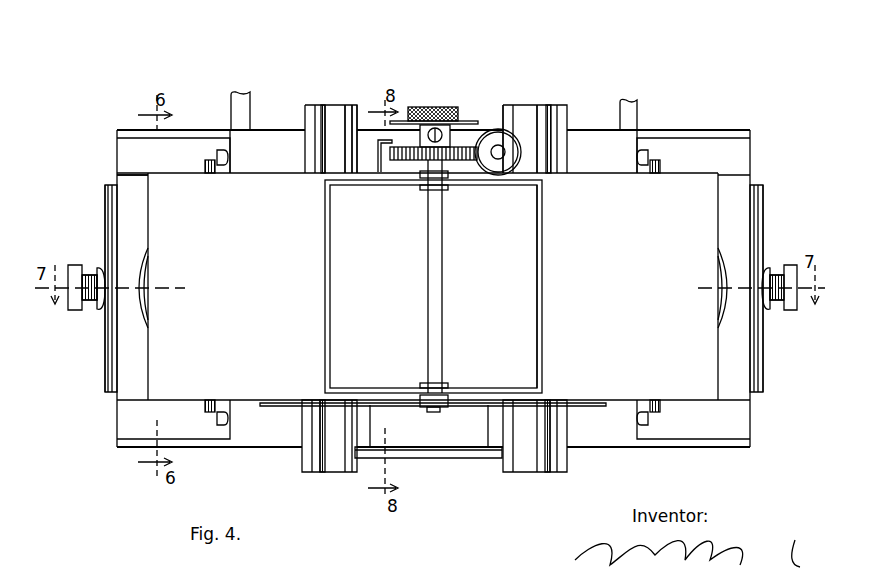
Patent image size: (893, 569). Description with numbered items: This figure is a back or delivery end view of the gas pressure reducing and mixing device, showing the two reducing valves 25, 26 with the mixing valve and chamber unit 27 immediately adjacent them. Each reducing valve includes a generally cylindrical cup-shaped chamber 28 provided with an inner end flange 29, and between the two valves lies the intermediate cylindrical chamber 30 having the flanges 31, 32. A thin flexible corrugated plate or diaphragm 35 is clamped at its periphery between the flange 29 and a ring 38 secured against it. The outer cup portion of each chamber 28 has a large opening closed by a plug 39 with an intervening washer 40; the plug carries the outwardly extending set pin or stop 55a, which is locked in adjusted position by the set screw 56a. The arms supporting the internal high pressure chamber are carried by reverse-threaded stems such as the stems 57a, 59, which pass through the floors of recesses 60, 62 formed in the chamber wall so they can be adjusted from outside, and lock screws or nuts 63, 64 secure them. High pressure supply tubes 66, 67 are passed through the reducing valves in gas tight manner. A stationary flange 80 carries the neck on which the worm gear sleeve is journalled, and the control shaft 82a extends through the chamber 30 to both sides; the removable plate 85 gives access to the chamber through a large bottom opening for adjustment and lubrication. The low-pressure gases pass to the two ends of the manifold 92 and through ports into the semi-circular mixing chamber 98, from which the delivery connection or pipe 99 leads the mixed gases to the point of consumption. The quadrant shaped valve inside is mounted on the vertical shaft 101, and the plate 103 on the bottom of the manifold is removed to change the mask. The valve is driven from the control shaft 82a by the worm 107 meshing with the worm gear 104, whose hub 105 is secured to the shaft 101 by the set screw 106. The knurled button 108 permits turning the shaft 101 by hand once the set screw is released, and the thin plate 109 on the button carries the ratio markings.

The reducing valve 25 is at (700, 128).
The reducing valve 26 is at (262, 128).
The mixing valve and chamber unit 27 is at (580, 148).
The cylindrical chamber 28 is at (433, 151).
The inner end flange 29 is at (312, 104).
The intermediate cylindrical chamber 30 is at (361, 128).
The flange 31 is at (503, 108).
The flange 32 is at (348, 104).
The flexible corrugated plate or diaphragm 35 is at (323, 104).
The ring 38 is at (338, 104).
The plug 39 is at (104, 200).
The washer 40 is at (108, 185).
The set pin or stop 55a is at (798, 232).
The set screw 56a is at (786, 322).
The stem 57a is at (676, 160).
The stem 59 is at (206, 407).
The recess 60 is at (433, 156).
The recess 62 is at (433, 419).
The lock screw or nut 63 is at (224, 150).
The lock screw or nut 64 is at (222, 426).
The high pressure supply tube 66 is at (630, 100).
The high pressure supply tube 67 is at (234, 95).
The flange 80 is at (520, 468).
The control shaft 82a is at (498, 153).
The removable plate 85 is at (420, 460).
The manifold 92 is at (433, 286).
The mixing chamber 98 is at (433, 286).
The delivery connection or pipe 99 is at (545, 262).
The vertical shaft 101 is at (428, 316).
The plate 103 is at (468, 408).
The worm gear 104 is at (400, 163).
The hub 105 is at (443, 134).
The set screw 106 is at (437, 124).
The worm 107 is at (505, 132).
The knurled button 108 is at (412, 106).
The thin plate 109 is at (466, 120).